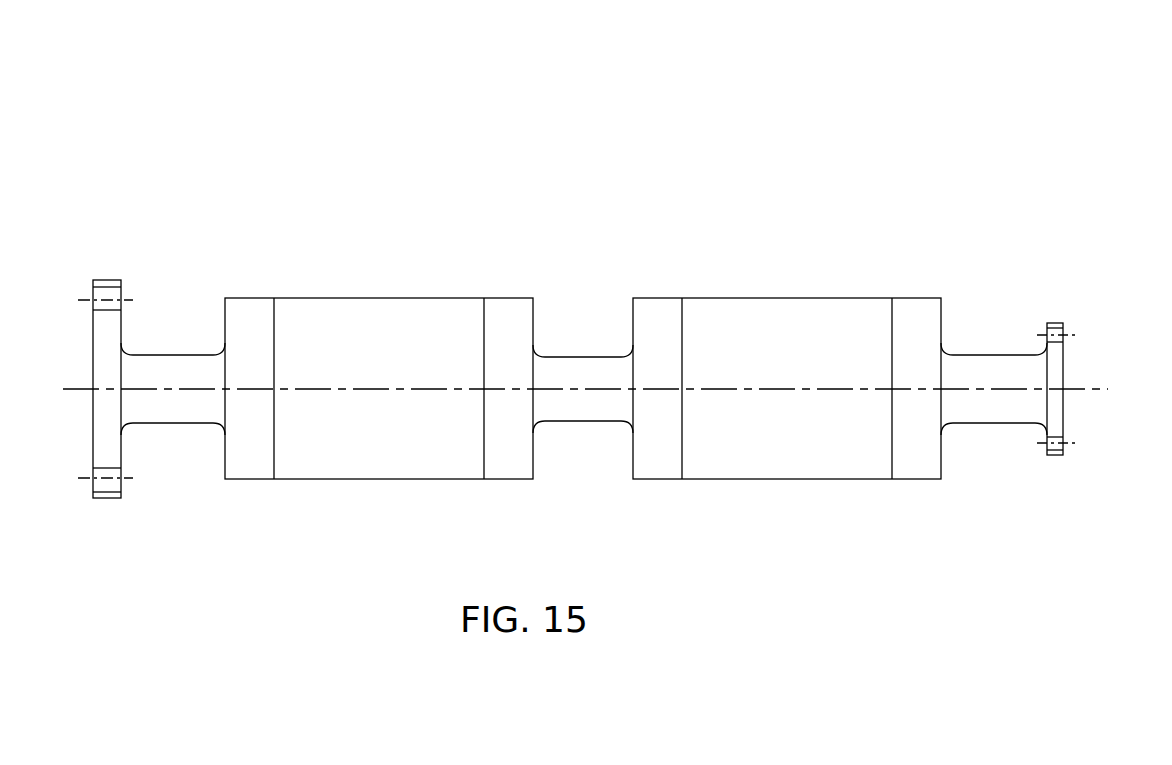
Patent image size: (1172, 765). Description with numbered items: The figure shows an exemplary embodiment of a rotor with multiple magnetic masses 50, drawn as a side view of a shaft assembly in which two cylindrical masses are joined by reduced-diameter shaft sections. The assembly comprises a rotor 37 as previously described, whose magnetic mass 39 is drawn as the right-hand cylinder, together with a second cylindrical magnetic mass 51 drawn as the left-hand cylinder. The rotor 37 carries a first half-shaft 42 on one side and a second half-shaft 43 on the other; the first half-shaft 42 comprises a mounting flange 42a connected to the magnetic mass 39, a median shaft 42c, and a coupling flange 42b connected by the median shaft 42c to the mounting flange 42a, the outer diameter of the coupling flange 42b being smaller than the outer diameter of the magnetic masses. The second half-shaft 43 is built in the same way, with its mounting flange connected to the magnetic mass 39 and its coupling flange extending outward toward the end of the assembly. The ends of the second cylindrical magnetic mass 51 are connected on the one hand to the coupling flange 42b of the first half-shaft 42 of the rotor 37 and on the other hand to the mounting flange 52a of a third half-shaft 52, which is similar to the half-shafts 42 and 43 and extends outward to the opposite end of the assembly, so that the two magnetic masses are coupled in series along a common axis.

The rotor with multiple magnetic masses 50 is at (585, 298).
The first rotor 37 is at (854, 345).
The magnetic mass 39 is at (787, 373).
The second half-shaft 43 is at (983, 332).
The third half-shaft 52 is at (165, 318).
The second cylindrical magnetic mass 51 is at (380, 370).
The first half-shaft 42 is at (583, 367).
The median shaft 42c is at (583, 410).
The coupling flange 42b is at (507, 470).
The mounting flange 42a is at (653, 463).
The mounting flange 52a is at (247, 470).